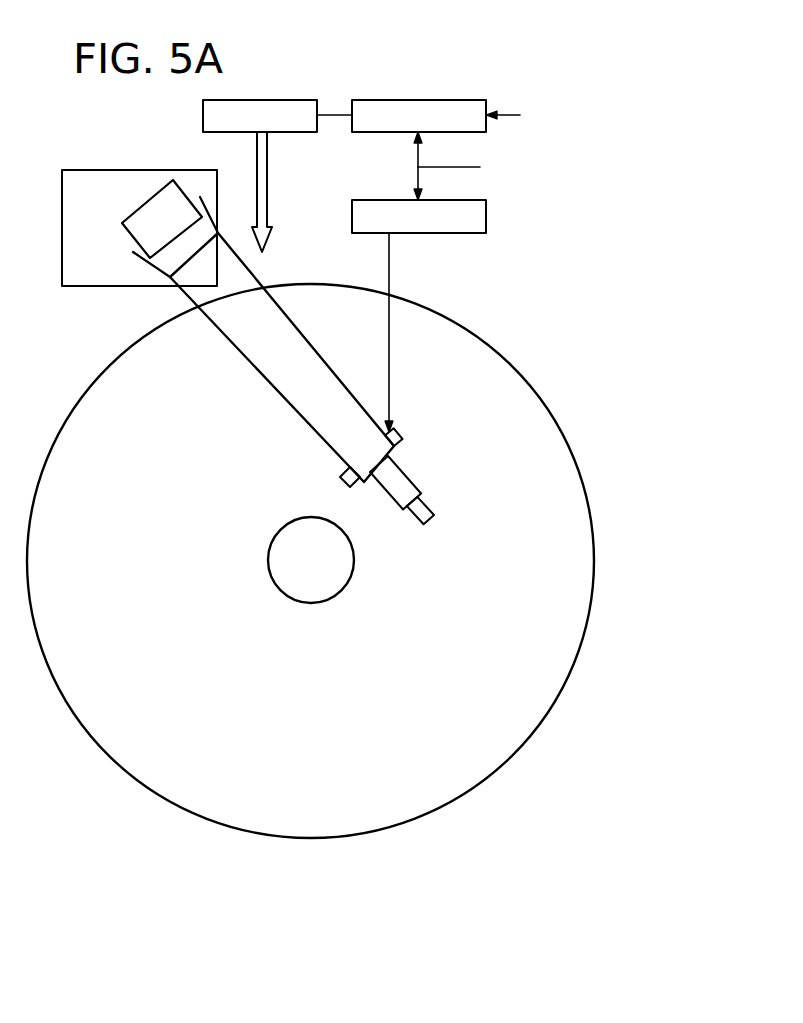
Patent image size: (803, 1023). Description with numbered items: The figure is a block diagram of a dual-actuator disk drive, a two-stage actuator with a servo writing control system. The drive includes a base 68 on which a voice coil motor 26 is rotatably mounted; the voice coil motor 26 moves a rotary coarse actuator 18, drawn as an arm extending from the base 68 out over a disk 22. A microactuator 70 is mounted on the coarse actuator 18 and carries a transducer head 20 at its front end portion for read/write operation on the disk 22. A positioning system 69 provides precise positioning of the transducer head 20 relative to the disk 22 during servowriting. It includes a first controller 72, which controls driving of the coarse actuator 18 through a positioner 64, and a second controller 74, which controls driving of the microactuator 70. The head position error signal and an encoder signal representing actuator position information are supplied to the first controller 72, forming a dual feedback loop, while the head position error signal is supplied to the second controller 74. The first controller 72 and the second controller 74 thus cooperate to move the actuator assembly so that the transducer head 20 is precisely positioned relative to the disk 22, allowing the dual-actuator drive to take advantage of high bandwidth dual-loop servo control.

The rotary coarse actuator 18 is at (302, 420).
The transducer head 20 is at (430, 506).
The disk 22 is at (532, 385).
The voice coil motor 26 is at (150, 198).
The positioner 64 is at (287, 100).
The base 68 is at (88, 170).
The positioning system 69 is at (563, 171).
The microactuator 70 is at (342, 480).
The first controller 72 is at (457, 100).
The second controller 74 is at (452, 233).